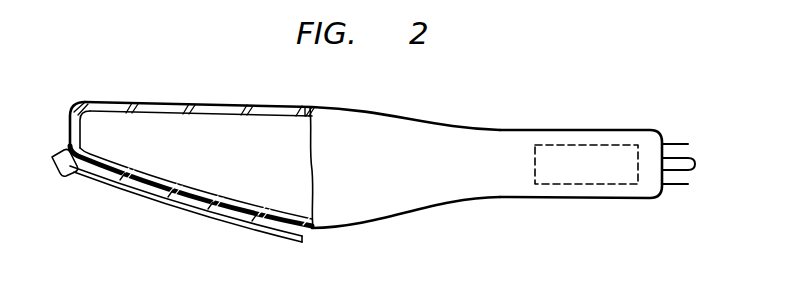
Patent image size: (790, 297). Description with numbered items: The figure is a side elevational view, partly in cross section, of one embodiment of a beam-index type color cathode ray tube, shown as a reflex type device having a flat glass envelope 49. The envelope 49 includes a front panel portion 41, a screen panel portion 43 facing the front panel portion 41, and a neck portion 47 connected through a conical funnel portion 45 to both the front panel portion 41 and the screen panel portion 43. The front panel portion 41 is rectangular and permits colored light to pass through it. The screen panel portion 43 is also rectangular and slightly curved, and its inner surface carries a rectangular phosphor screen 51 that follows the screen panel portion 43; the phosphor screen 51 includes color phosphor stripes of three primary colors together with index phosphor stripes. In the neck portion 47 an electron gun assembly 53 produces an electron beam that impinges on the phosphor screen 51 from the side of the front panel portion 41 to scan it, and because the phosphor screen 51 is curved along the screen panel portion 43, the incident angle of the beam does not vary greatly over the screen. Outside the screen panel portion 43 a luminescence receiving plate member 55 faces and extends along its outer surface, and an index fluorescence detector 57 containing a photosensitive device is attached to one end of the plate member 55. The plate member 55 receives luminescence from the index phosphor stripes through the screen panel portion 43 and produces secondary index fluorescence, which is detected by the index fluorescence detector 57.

The front panel portion 41 is at (169, 102).
The screen panel portion 43 is at (108, 166).
The conical funnel portion 45 is at (427, 200).
The neck portion 47 is at (496, 139).
The flat glass envelope 49 is at (330, 101).
The phosphor screen 51 is at (192, 185).
The electron gun assembly 53 is at (535, 150).
The luminescence receiving plate member 55 is at (278, 240).
The index fluorescence detector 57 is at (57, 152).